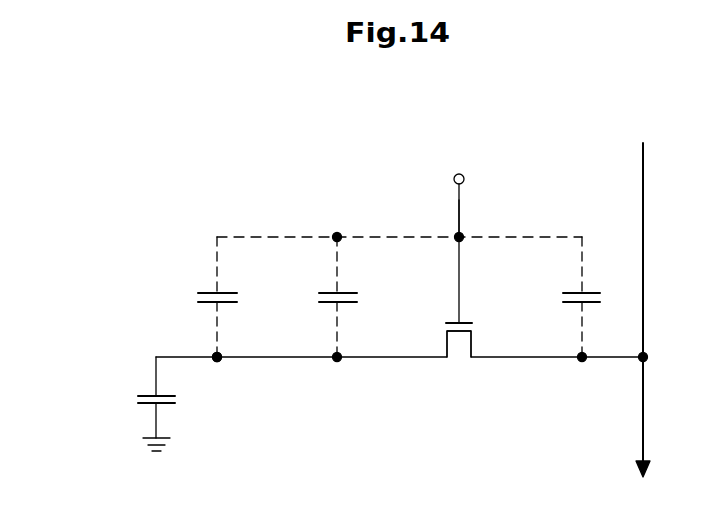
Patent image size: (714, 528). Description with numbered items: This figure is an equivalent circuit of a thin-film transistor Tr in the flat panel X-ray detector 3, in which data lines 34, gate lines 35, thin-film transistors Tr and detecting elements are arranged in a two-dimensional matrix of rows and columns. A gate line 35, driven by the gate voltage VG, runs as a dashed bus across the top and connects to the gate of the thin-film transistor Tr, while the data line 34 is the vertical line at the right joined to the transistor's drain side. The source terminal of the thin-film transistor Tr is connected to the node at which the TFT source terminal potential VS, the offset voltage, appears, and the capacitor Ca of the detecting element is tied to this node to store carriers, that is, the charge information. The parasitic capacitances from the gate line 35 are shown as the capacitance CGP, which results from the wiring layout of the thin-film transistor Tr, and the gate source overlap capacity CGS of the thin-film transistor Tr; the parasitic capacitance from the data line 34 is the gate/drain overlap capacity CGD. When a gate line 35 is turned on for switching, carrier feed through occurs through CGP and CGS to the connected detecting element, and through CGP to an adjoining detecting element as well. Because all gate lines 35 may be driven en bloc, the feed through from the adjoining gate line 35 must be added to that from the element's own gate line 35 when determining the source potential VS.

The flat panel X-ray detector 3 is at (204, 189).
The data line 34 is at (642, 200).
The gate line 35 is at (458, 200).
The capacitor Ca is at (135, 396).
The parasitic capacitance from the gate line resulting from wiring layout CGP is at (190, 297).
The gate source overlap capacity CGS is at (368, 300).
The gate/drain overlap capacity CGD is at (553, 298).
The thin-film transistor Tr is at (459, 362).
The gate voltage VG is at (461, 231).
The TFT source terminal potential VS is at (215, 374).